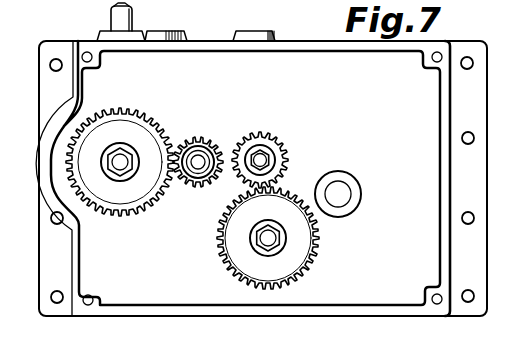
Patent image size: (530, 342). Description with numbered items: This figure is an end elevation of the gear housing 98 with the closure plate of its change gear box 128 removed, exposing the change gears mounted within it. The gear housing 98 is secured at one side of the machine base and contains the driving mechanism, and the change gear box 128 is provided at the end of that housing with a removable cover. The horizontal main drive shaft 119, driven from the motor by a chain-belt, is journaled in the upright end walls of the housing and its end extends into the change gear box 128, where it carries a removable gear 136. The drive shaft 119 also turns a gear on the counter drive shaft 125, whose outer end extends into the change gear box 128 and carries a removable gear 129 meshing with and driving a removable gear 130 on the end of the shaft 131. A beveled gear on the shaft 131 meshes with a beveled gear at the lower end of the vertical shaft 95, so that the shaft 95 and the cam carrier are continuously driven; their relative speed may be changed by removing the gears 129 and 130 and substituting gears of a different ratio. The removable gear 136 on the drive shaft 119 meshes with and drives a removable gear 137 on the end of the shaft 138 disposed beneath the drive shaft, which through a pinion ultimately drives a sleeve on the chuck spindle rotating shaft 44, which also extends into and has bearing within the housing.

The gear housing 98 is at (452, 42).
The change gear box 128 is at (298, 52).
The vertical shaft 95 is at (111, 14).
The removable gear 130 is at (117, 218).
The shaft 131 is at (127, 157).
The removable gear 129 is at (207, 137).
The counter drive shaft 125 is at (197, 168).
The removable gear 136 is at (270, 143).
The main drive shaft 119 is at (263, 160).
The removable gear 137 is at (310, 239).
The shaft 138 is at (265, 241).
The chuck spindle rotating shaft 44 is at (342, 193).